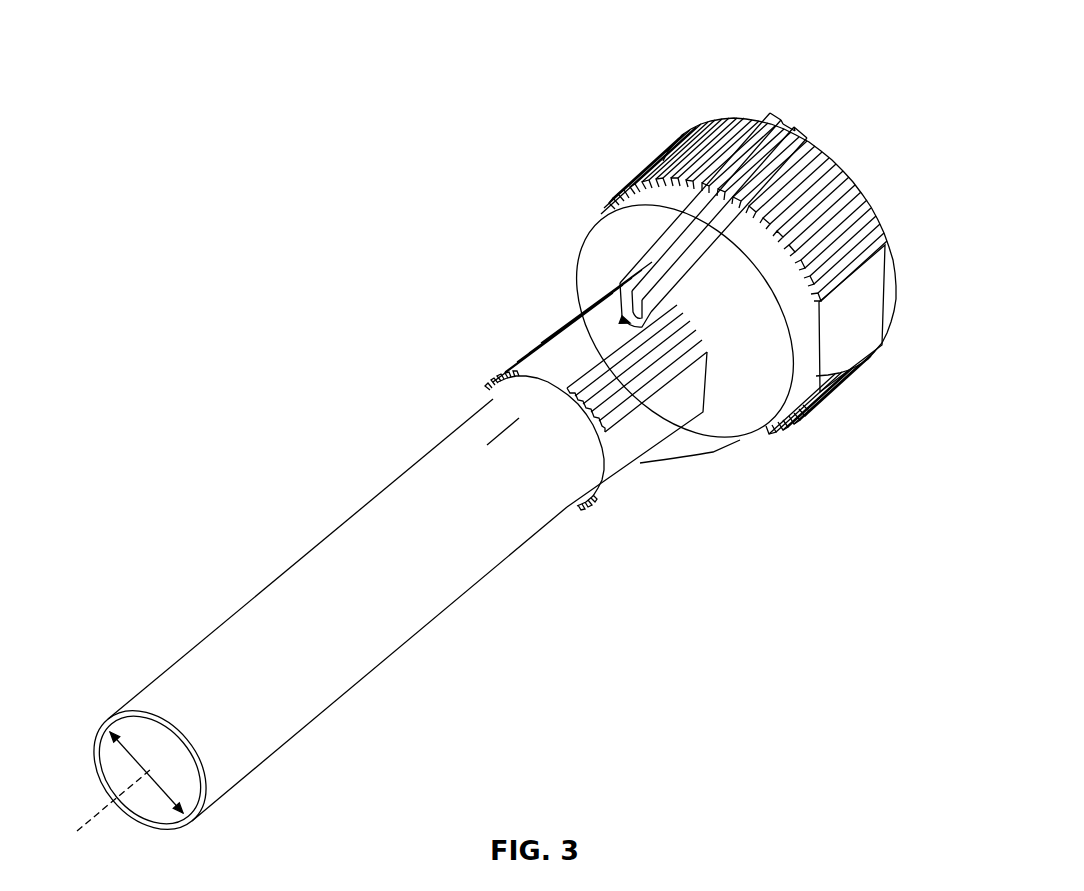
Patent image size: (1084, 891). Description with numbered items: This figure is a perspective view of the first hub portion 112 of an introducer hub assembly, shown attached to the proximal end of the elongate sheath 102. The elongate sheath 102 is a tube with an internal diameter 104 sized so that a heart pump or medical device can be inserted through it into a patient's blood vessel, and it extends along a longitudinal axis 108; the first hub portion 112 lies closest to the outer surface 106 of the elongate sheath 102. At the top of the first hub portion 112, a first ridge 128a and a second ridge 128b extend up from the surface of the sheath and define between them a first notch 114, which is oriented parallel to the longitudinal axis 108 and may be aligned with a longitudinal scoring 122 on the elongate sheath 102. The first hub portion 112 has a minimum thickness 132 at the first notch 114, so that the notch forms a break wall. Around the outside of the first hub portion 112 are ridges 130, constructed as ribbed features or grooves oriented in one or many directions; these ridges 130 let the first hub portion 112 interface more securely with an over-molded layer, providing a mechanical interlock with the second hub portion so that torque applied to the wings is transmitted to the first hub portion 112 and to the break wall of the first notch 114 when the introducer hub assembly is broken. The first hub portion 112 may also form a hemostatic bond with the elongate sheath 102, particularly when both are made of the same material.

The elongate sheath 102 is at (305, 640).
The internal diameter 104 is at (160, 798).
The outer surface 106 is at (191, 663).
The longitudinal axis 108 is at (80, 827).
The first hub portion 112 is at (751, 410).
The first notch 114 is at (786, 120).
The longitudinal scoring 122 is at (500, 428).
The first ridge 128a is at (800, 128).
The second ridge 128b is at (780, 118).
The ridges 130 is at (878, 218).
The minimum thickness 132 is at (628, 322).